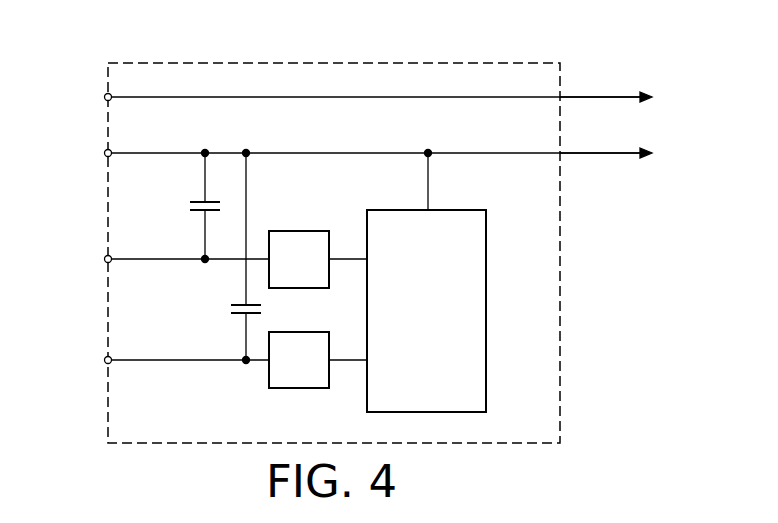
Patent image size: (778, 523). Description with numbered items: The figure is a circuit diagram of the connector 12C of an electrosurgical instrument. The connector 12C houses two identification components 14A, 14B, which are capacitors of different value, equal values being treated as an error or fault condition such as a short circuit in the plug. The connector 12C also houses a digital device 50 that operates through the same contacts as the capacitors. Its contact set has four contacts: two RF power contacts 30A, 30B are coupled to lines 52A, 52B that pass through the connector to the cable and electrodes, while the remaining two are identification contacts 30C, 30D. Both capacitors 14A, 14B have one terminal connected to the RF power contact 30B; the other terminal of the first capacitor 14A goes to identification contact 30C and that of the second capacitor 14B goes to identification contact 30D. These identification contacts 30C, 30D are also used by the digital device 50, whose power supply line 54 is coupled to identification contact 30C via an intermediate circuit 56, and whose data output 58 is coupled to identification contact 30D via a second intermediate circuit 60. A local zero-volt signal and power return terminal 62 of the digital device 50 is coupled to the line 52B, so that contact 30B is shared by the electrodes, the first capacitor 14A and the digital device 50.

The connector 12C is at (530, 63).
The RF power contact 30A is at (104, 97).
The RF power contact 30B is at (104, 153).
The identification contact 30C is at (104, 259).
The identification contact 30D is at (104, 360).
The line 52A is at (603, 97).
The line 52B is at (603, 153).
The identification component 14A is at (189, 206).
The identification component 14B is at (230, 310).
The intermediate circuit 56 is at (296, 231).
The power supply line 54 is at (346, 258).
The data output 58 is at (346, 359).
The second intermediate circuit 60 is at (268, 377).
The local 0V signal and power return terminal 62 is at (430, 177).
The digital device 50 is at (487, 214).